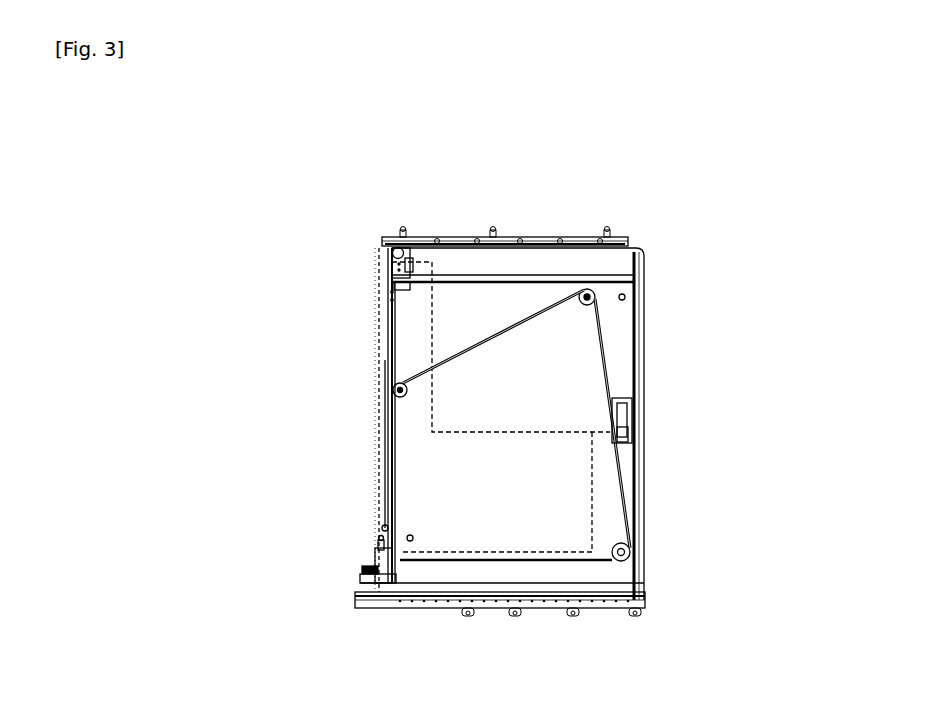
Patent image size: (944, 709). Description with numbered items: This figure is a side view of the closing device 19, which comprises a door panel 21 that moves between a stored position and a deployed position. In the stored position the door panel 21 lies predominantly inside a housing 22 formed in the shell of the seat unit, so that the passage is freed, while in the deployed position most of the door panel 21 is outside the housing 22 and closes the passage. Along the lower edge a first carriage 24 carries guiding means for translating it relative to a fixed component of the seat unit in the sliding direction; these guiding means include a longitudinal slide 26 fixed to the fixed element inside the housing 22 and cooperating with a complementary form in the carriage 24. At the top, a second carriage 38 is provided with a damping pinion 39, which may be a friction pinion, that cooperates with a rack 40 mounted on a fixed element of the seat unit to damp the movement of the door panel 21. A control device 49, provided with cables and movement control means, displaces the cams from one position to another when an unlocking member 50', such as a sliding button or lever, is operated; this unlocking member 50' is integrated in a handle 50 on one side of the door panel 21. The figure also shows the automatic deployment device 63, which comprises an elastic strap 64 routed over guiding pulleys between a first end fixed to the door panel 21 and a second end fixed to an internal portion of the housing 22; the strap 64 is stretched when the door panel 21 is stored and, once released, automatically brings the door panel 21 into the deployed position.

The closing device 19 is at (368, 192).
The door panel 21 is at (617, 285).
The housing 22 is at (380, 413).
The first carriage 24 is at (373, 556).
The longitudinal slide 26 is at (440, 583).
The second carriage 38 is at (395, 262).
The damping pinion 39 is at (393, 249).
The rack 40 is at (463, 238).
The control device 49 is at (557, 440).
The handle 50 is at (700, 390).
The unlocking member 50' is at (709, 438).
The automatic deployment device 63 is at (518, 307).
The elastic strap 64 is at (603, 348).